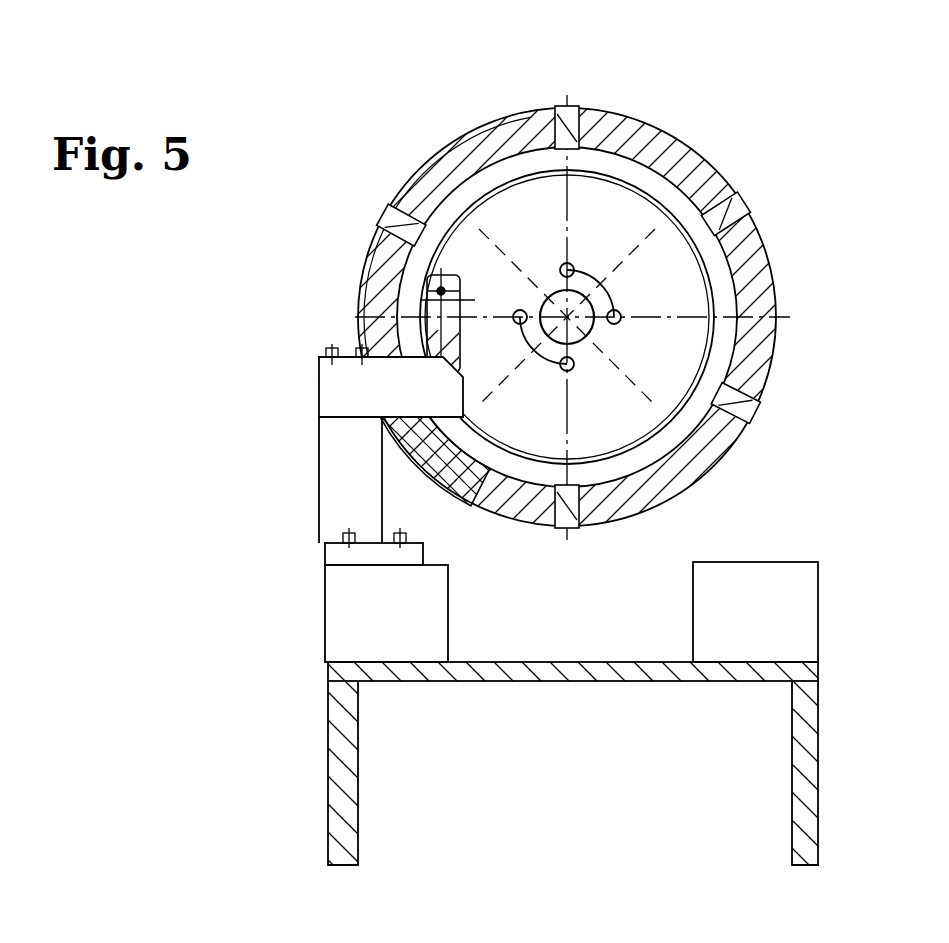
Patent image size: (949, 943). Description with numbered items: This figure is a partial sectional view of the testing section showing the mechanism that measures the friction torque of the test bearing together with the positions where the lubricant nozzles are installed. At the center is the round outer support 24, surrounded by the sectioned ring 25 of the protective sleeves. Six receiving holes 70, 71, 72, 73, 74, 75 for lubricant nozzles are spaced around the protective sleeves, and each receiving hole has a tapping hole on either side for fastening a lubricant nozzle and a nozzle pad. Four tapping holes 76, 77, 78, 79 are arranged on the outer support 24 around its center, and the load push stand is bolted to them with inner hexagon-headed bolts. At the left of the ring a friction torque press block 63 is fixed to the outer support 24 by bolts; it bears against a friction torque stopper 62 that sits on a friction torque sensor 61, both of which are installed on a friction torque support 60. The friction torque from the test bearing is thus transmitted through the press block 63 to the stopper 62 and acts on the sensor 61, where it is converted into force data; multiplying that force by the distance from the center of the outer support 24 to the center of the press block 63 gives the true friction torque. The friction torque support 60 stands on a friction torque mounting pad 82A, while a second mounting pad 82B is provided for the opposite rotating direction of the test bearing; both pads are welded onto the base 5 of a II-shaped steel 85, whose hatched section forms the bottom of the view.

The base 5 is at (573, 763).
The outer support 24 is at (536, 215).
The ring body 25 is at (763, 274).
The friction torque support 60 is at (335, 468).
The friction torque sensor 61 is at (350, 395).
The friction torque stopper 62 is at (423, 340).
The friction torque press block 63 is at (435, 291).
The receiving hole 70 is at (590, 107).
The receiving hole 71 is at (716, 210).
The receiving hole 72 is at (748, 418).
The receiving hole 73 is at (585, 520).
The receiving hole 74 is at (462, 493).
The receiving hole 75 is at (407, 240).
The tapping hole 76 is at (572, 266).
The tapping hole 77 is at (620, 314).
The tapping hole 78 is at (572, 368).
The tapping hole 79 is at (515, 310).
The friction torque mounting pad 82A is at (410, 615).
The friction torque mounting pad 82B is at (750, 590).
The II-shaped steel 85 is at (582, 673).